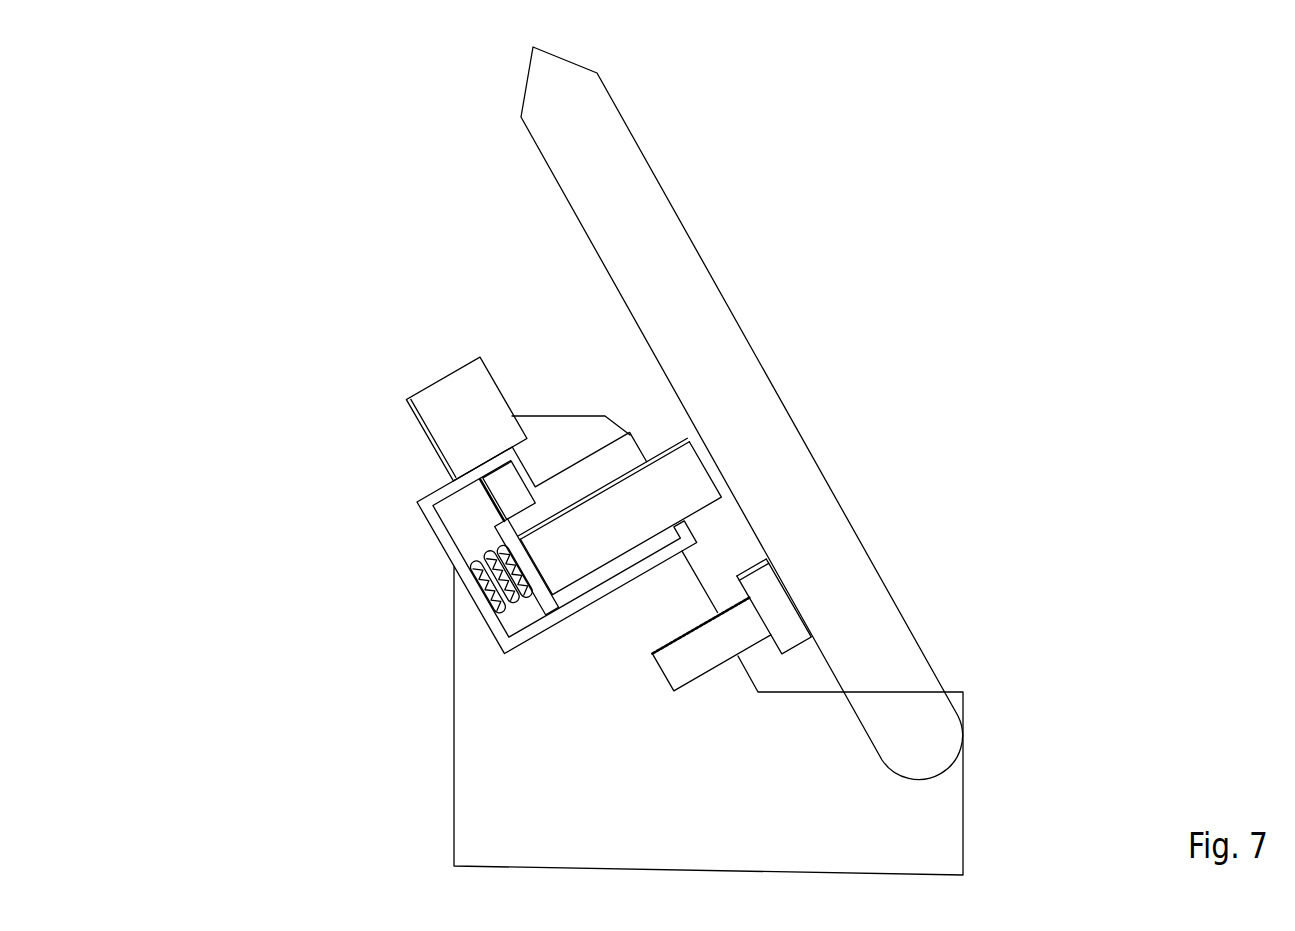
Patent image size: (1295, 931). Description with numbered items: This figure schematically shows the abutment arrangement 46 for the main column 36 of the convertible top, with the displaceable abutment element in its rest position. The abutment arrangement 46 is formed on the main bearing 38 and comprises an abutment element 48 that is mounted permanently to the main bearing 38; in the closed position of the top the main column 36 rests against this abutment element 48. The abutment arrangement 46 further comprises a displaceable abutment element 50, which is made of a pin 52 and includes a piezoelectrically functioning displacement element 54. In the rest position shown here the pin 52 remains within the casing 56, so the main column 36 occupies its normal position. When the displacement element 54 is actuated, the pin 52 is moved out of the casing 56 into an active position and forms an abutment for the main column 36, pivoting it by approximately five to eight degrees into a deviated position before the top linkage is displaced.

The main column 36 is at (680, 290).
The main bearing 38 is at (493, 795).
The abutment arrangement 46 is at (678, 442).
The abutment element 48 is at (783, 610).
The displaceable abutment element 50 is at (680, 486).
The pin 52 is at (570, 540).
The displacement element 54 is at (462, 572).
The casing 56 is at (428, 492).